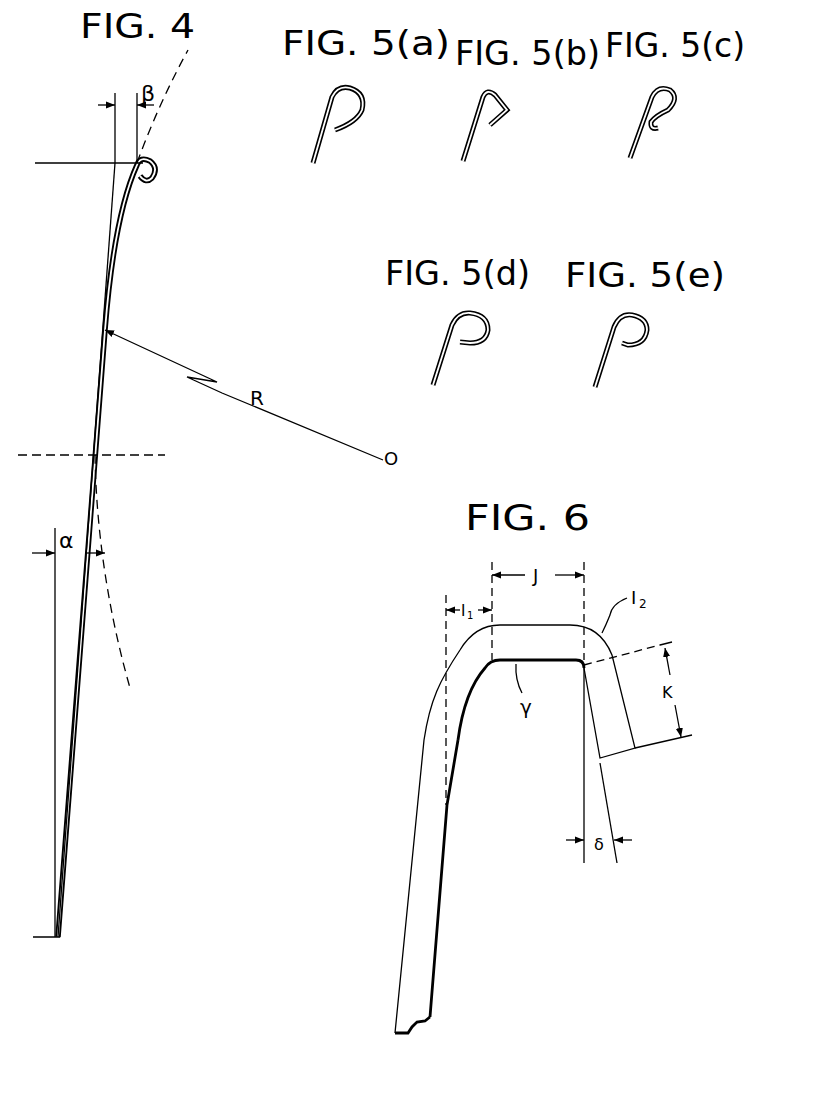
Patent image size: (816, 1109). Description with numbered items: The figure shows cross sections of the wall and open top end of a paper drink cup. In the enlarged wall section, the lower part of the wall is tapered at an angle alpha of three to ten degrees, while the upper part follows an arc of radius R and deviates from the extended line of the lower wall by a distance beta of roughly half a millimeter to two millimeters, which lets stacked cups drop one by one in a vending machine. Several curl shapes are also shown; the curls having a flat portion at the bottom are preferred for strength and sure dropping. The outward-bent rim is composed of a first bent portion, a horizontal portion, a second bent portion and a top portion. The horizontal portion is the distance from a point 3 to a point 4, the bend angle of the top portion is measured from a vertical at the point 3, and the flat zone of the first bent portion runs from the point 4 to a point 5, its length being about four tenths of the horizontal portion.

The point 3 is at (558, 677).
The point 4 is at (494, 700).
The point 5 is at (448, 878).